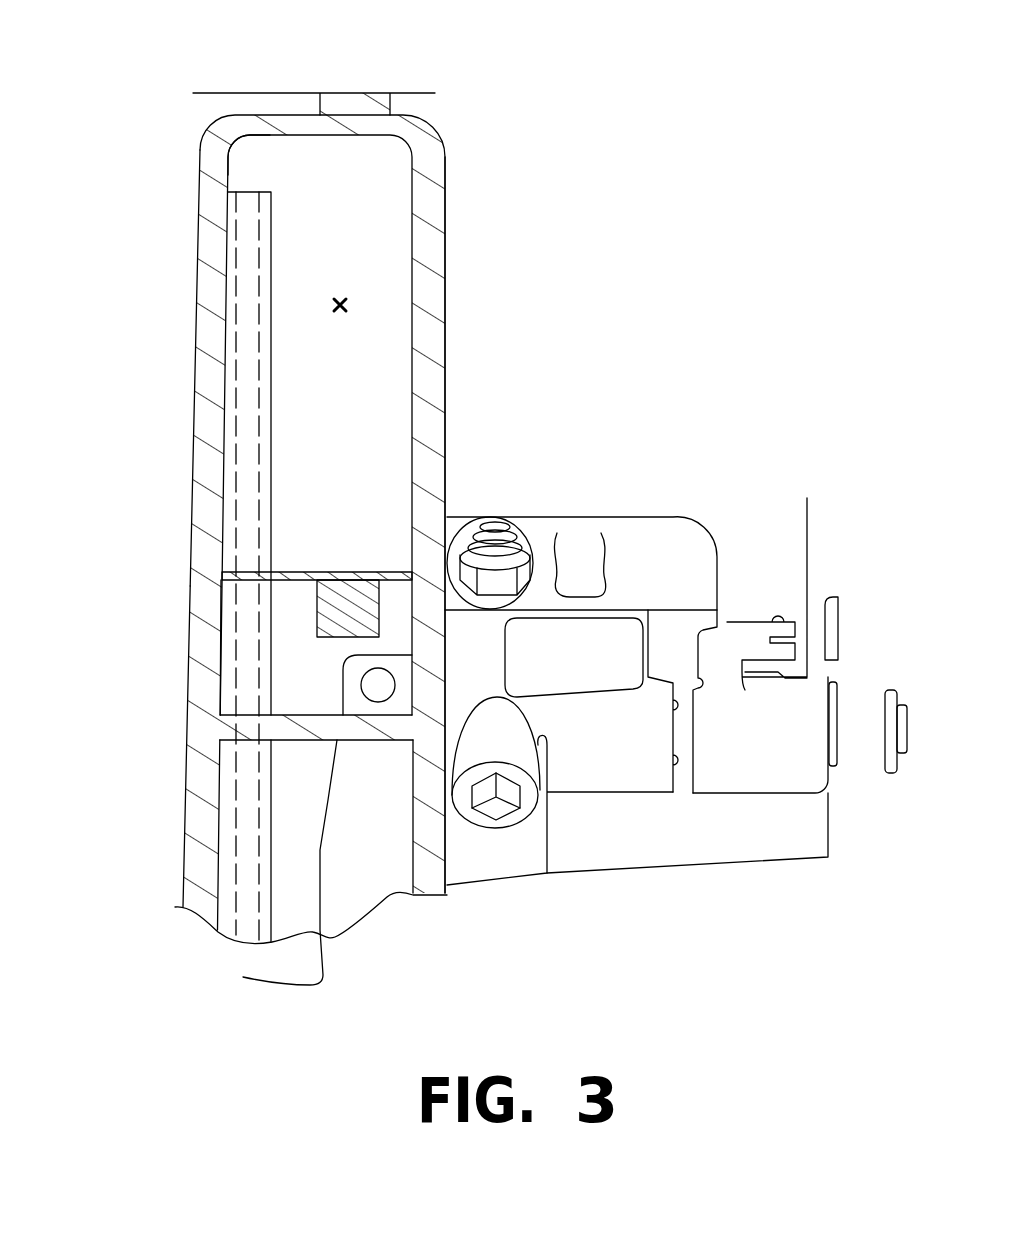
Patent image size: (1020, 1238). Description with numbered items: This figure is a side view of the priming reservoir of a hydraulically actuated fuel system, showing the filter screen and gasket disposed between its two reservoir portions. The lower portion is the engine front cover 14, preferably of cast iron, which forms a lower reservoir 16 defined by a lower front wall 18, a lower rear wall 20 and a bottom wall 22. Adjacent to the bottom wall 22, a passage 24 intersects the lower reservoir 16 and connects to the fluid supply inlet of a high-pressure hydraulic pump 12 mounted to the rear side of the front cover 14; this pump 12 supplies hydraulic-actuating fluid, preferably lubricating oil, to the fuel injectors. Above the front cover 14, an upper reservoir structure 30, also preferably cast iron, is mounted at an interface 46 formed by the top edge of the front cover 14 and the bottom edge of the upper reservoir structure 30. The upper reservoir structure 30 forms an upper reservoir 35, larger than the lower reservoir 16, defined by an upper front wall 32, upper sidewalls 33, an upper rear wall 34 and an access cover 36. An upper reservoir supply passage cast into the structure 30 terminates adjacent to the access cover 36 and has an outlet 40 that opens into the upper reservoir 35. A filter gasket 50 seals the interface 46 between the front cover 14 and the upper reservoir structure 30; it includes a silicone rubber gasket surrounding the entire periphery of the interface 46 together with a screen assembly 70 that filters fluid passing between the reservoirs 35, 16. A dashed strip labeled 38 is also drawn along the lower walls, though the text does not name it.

The high-pressure hydraulic pump 12 is at (668, 868).
The front cover 14 is at (186, 804).
The lower reservoir 16 is at (300, 660).
The lower front wall 18 is at (194, 697).
The lower rear wall 20 is at (447, 645).
The bottom wall 22 is at (238, 869).
The passage 24 is at (378, 702).
The upper reservoir structure 30 is at (454, 270).
The upper front wall 32 is at (196, 347).
The upper sidewalls 33 is at (342, 281).
The upper rear wall 34 is at (446, 318).
The upper reservoir 35 is at (372, 170).
The access cover 36 is at (362, 93).
The channel 38 is at (236, 294).
The outlet 40 is at (244, 190).
The interface 46 is at (222, 580).
The filter gasket 50 is at (298, 560).
The screen assembly 70 is at (448, 522).